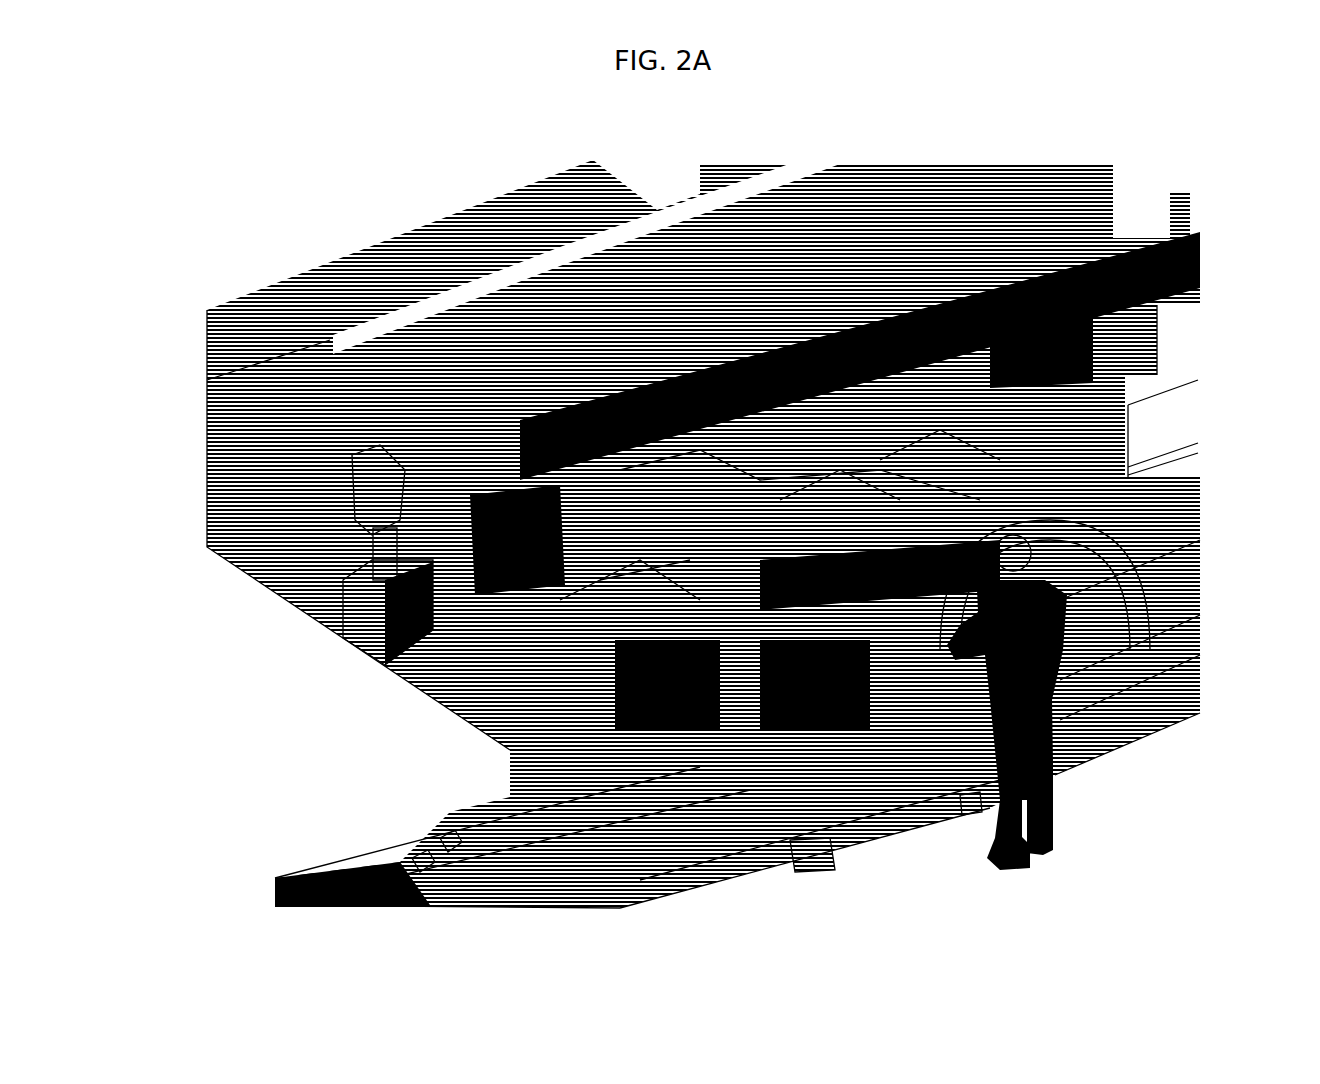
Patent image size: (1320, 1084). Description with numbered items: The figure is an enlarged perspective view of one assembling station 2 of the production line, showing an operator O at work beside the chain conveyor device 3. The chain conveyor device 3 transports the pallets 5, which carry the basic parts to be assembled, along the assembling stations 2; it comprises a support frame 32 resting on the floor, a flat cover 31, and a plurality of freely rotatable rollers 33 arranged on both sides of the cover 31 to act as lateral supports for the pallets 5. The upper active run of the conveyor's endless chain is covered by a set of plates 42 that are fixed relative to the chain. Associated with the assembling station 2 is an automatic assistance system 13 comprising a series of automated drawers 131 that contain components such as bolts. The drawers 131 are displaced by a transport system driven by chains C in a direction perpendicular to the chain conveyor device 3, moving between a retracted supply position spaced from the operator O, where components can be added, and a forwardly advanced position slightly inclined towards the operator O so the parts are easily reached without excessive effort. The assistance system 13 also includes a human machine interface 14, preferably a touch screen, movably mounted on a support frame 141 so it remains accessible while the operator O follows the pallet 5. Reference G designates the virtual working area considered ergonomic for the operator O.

The assembling station 2 is at (1215, 405).
The support frame 141 is at (372, 520).
The automatic assistance system 13 is at (278, 610).
The human machine interface 14 is at (357, 643).
The rollers 33 is at (448, 846).
The flat cover 31 is at (560, 885).
The chain conveyor device 3 is at (765, 880).
The automated drawers 131 is at (832, 850).
The pallet 5 is at (933, 813).
The support frame 32 is at (975, 815).
The operator O is at (1065, 805).
The plates 42 is at (1190, 622).
The virtual working area G is at (1118, 548).
The chains C is at (780, 508).